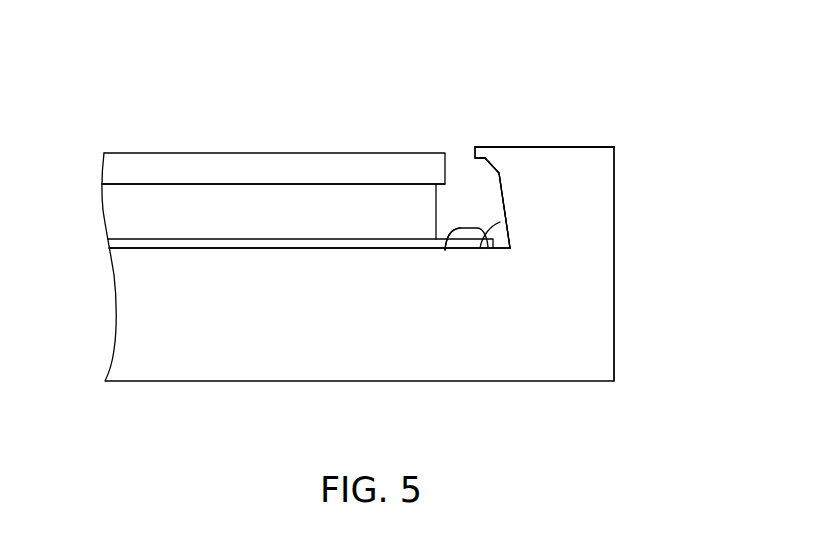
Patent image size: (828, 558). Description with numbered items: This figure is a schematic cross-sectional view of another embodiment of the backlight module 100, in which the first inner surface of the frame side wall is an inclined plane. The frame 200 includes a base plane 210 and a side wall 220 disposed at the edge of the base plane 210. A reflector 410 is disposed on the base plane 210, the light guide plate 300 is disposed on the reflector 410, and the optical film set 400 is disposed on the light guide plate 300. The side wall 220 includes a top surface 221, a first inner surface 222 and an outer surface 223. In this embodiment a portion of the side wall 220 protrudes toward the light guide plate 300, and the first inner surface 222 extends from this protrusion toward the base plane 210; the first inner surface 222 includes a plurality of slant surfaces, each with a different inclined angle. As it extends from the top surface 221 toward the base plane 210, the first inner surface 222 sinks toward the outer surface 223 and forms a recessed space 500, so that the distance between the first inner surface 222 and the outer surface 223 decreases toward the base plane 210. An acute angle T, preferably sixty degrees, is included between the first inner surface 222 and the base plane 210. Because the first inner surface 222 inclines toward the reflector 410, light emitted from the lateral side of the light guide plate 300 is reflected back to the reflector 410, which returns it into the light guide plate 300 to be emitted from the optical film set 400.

The backlight module 100 is at (121, 18).
The frame 200 is at (608, 290).
The base plane 210 is at (505, 221).
The side wall 220 is at (544, 158).
The top surface 221 is at (573, 146).
The first inner surface 222 is at (500, 174).
The outer surface 223 is at (615, 195).
The light guide plate 300 is at (112, 205).
The optical film set 400 is at (112, 170).
The reflector 410 is at (112, 243).
The recessed space 500 is at (483, 182).
The acute angle T is at (445, 250).